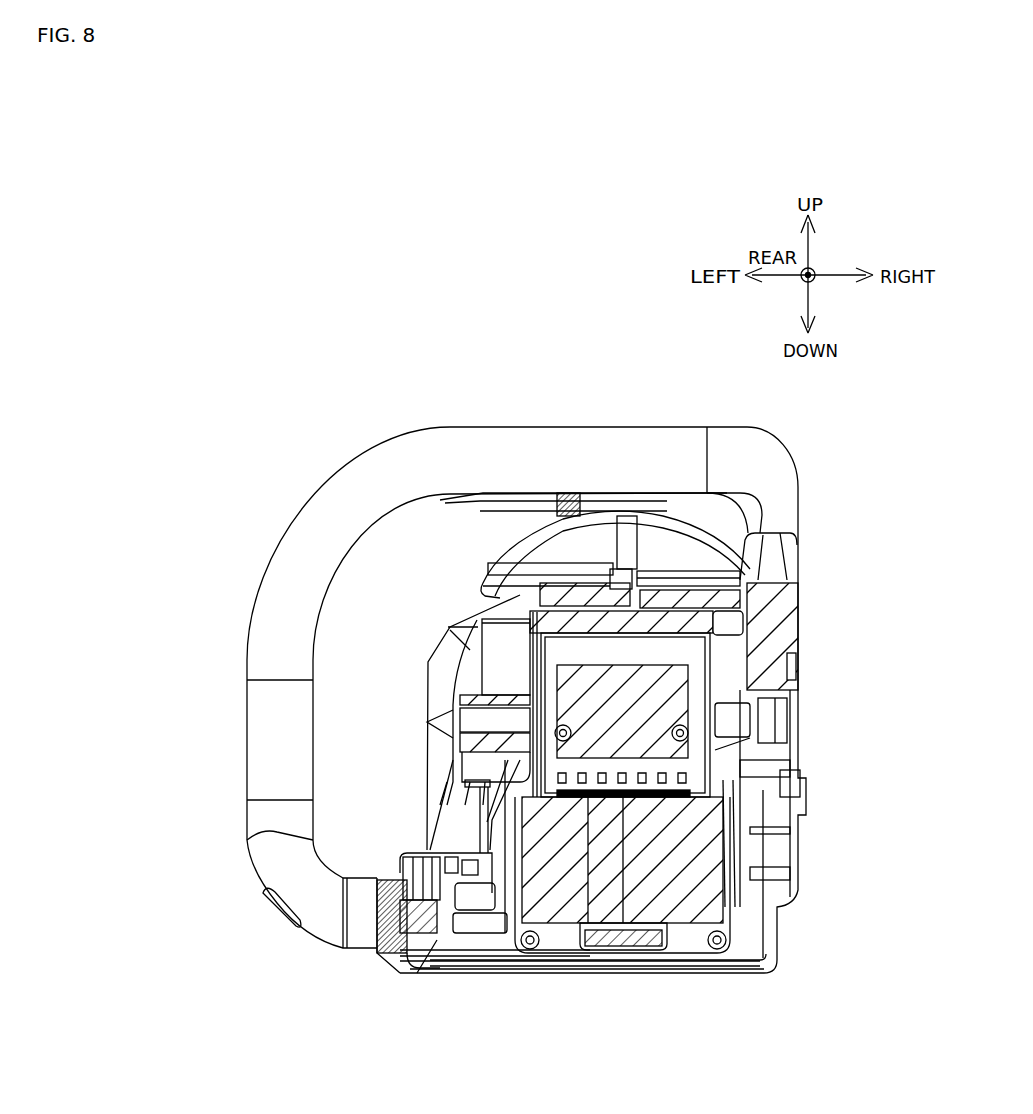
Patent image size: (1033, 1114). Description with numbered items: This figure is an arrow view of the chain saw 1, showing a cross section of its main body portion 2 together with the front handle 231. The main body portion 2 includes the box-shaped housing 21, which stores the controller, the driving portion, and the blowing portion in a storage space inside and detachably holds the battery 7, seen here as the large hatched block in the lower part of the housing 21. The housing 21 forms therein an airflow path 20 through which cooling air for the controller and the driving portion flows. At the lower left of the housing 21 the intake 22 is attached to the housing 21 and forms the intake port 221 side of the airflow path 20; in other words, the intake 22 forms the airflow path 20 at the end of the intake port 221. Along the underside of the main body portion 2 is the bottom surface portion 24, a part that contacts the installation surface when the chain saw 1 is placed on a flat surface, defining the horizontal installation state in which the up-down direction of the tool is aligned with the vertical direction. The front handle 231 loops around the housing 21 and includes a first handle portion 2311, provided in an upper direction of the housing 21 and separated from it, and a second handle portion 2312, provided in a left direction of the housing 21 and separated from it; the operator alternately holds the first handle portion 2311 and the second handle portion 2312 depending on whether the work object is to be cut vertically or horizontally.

The chain saw 1 is at (310, 389).
The main body portion 2 is at (821, 803).
The battery 7 is at (690, 888).
The airflow path 20 is at (410, 863).
The housing 21 is at (778, 618).
The intake 22 is at (387, 957).
The intake port 221 is at (427, 970).
The bottom surface portion 24 is at (655, 980).
The front handle 231 is at (471, 597).
The first handle portion 2311 is at (626, 427).
The second handle portion 2312 is at (247, 713).